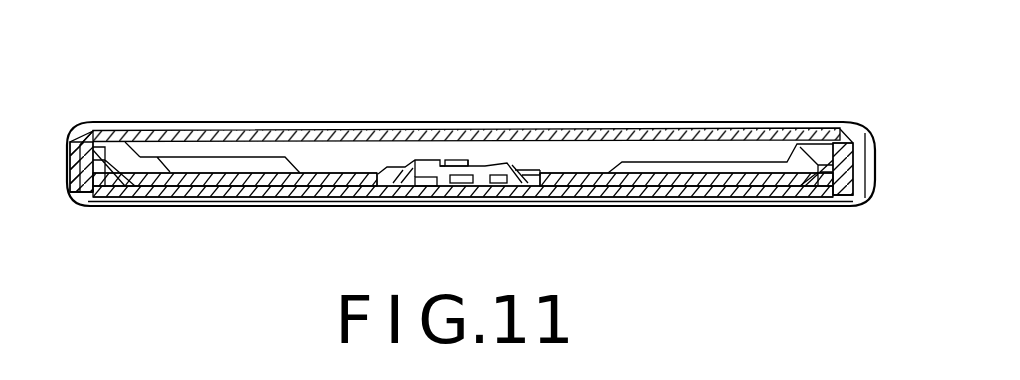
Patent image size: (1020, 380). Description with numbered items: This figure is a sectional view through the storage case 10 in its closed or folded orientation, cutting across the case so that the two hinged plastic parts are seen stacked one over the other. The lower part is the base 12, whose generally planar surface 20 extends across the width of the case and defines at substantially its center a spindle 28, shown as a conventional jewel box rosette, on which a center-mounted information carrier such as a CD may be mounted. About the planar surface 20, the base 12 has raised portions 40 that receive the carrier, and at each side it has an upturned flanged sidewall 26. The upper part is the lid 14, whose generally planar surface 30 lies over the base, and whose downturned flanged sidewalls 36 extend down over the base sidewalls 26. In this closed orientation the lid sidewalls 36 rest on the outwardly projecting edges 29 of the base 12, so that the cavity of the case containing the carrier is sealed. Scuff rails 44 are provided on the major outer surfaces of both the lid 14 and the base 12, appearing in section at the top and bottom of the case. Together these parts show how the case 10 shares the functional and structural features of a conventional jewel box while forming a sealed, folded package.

The storage case 10 is at (389, 221).
The base 12 is at (475, 208).
The lid 14 is at (478, 125).
The planar surface 20 is at (341, 172).
The base sidewalls 26 is at (83, 188).
The spindle 28 is at (428, 165).
The outwardly projecting edges 29 is at (72, 197).
The planar surface 30 is at (557, 147).
The lid sidewalls 36 is at (70, 124).
The raised portions 40 is at (222, 158).
The scuff rails 44 is at (88, 128).